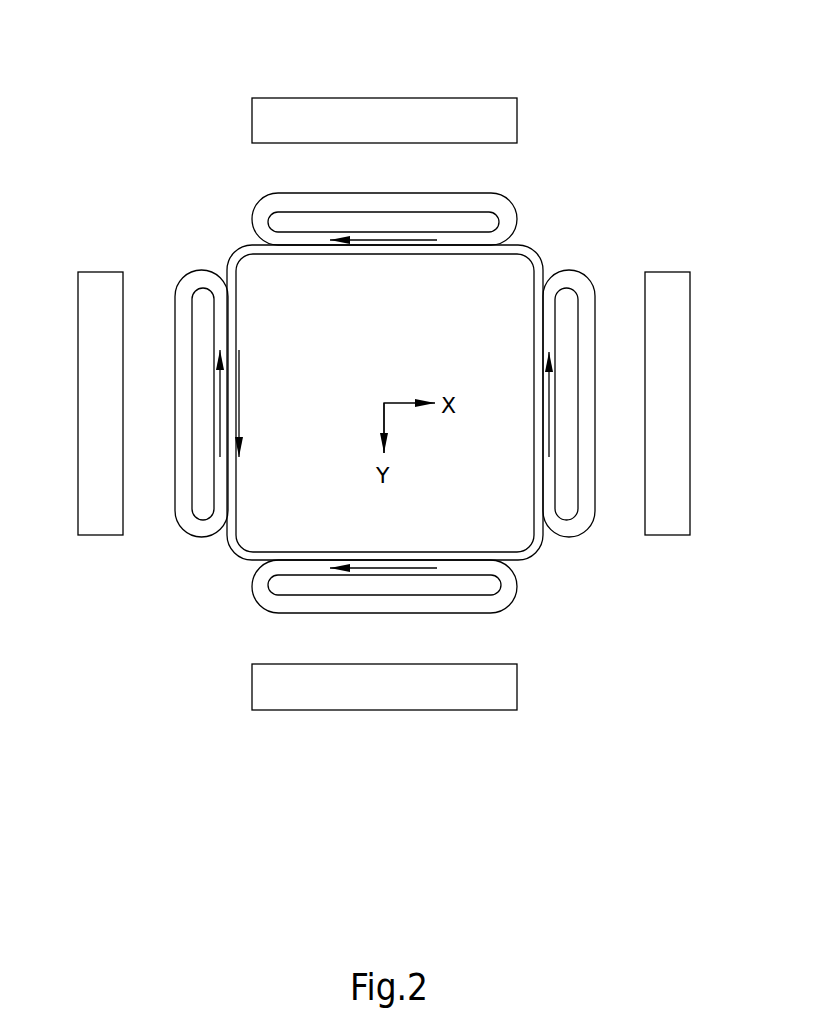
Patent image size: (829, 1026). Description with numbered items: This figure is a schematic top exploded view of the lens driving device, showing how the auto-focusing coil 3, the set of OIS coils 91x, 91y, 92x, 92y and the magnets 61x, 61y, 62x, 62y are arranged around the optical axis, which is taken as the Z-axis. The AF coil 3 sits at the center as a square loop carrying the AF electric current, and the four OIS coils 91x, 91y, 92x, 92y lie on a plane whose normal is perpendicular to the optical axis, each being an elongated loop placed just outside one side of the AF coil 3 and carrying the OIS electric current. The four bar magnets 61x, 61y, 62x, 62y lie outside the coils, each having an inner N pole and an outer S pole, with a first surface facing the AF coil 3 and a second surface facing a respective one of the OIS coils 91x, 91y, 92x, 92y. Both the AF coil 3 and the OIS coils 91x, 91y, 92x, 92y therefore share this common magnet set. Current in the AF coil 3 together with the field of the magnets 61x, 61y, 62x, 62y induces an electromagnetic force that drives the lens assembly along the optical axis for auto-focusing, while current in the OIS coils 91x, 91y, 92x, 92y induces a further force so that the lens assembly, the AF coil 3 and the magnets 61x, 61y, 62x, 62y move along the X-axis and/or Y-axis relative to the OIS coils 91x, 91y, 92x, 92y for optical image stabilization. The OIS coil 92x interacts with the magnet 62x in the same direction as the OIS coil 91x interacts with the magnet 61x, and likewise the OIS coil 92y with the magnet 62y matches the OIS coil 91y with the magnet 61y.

The auto-focusing coil 3 is at (520, 560).
The magnet 61x is at (677, 280).
The magnet 61y is at (491, 697).
The magnet 62x is at (91, 278).
The magnet 62y is at (490, 110).
The OIS coil 91x is at (567, 278).
The OIS coil 91y is at (493, 604).
The OIS coil 92x is at (201, 278).
The OIS coil 92y is at (493, 203).